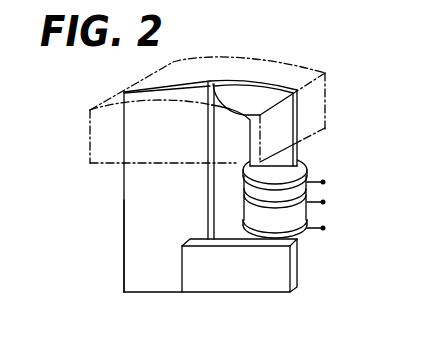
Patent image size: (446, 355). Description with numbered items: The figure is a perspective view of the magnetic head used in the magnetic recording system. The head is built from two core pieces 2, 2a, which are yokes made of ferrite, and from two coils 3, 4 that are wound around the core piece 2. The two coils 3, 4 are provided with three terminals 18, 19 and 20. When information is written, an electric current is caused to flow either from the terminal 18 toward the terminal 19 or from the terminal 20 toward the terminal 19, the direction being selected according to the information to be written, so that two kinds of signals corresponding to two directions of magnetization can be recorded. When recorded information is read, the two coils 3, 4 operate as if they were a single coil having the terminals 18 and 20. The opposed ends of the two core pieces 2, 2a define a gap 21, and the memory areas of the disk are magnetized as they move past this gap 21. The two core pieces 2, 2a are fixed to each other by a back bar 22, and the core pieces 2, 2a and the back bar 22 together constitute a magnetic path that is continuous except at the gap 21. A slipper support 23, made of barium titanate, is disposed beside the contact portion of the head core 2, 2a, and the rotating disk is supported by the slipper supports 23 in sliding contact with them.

The core piece 2 is at (290, 157).
The core piece 2a is at (157, 283).
The coil 3 is at (306, 191).
The coil 4 is at (306, 214).
The terminal 18 is at (323, 182).
The terminal 19 is at (323, 202).
The terminal 20 is at (323, 228).
The gap 21 is at (213, 82).
The back bar 22 is at (250, 283).
The slipper support 23 is at (323, 100).